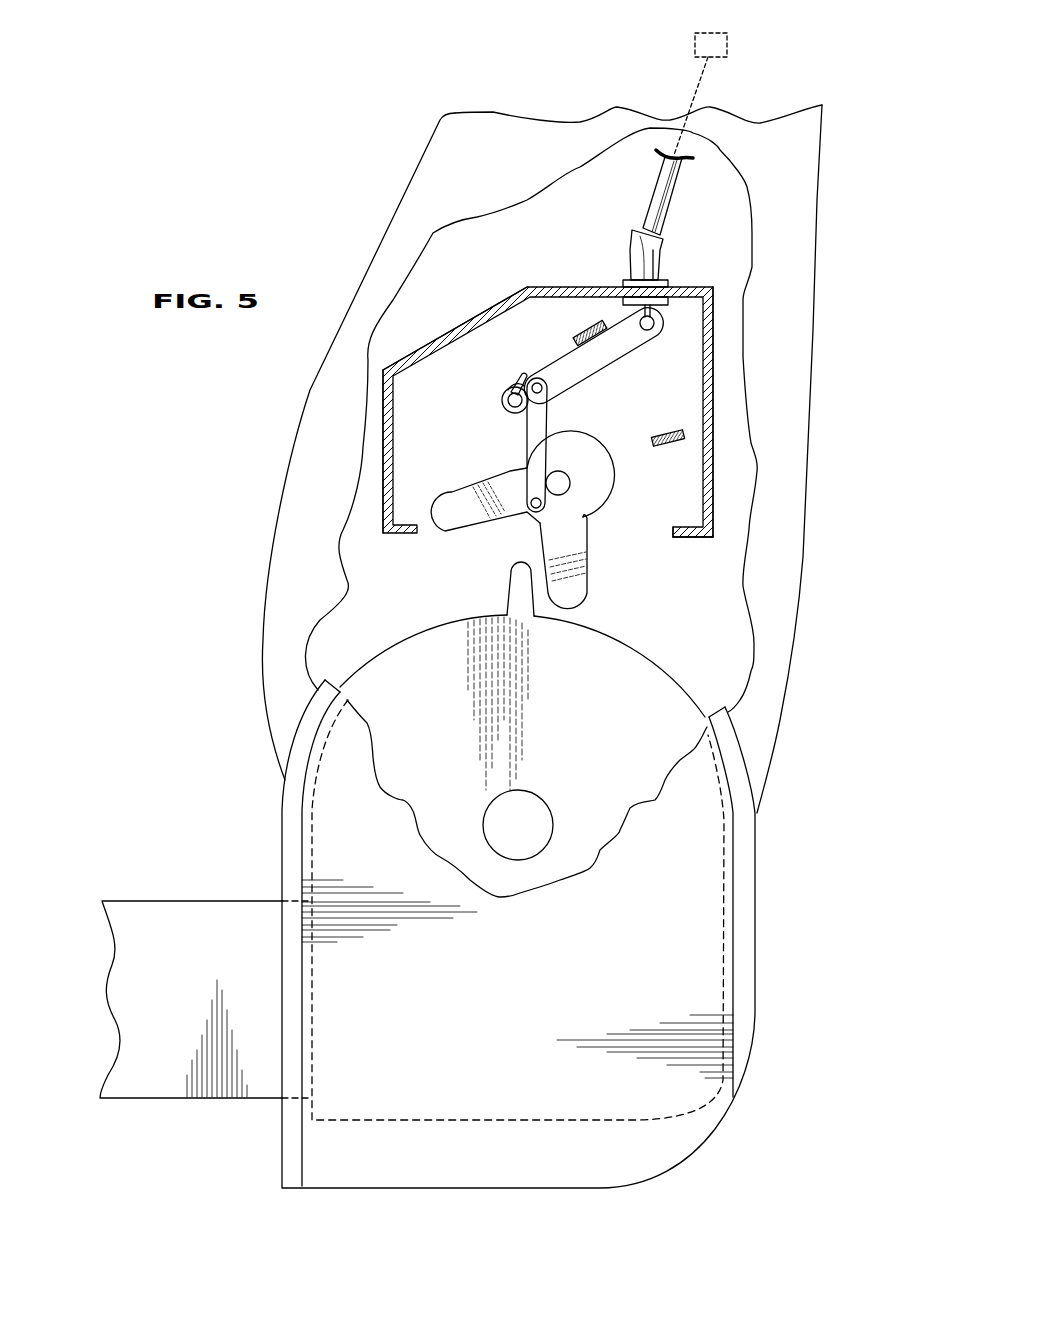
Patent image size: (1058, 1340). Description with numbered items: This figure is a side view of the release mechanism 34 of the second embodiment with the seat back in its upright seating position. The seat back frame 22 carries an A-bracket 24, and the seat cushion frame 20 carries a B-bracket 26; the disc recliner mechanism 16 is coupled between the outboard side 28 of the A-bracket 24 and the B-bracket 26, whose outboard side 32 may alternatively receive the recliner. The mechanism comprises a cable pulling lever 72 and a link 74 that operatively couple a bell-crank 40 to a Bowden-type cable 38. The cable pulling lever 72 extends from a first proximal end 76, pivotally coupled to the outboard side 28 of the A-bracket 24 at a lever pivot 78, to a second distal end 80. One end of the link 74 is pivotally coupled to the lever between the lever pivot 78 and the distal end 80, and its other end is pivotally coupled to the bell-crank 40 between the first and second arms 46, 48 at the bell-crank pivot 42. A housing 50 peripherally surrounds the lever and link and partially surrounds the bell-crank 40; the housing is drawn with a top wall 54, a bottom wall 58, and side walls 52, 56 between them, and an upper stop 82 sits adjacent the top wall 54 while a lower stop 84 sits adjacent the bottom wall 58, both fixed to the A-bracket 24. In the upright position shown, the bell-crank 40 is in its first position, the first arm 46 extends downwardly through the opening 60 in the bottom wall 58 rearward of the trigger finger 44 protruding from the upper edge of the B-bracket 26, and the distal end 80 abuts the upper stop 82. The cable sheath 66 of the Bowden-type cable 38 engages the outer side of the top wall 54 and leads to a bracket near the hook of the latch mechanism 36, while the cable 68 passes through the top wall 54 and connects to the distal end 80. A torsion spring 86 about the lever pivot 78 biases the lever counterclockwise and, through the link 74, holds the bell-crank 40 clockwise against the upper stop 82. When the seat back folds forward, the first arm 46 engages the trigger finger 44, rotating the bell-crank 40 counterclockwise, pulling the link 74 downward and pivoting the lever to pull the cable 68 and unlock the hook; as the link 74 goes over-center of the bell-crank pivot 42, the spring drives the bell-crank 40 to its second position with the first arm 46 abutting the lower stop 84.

The disc recliner mechanism 16 is at (526, 824).
The seat cushion frame 20 is at (138, 906).
The seat back frame 22 is at (500, 126).
The A-bracket 24 is at (812, 170).
The B-bracket 26 is at (660, 678).
The outboard side 28 is at (465, 175).
The outboard side 32 is at (415, 752).
The release mechanism 34 is at (375, 200).
The latch mechanism 36 is at (695, 44).
The Bowden-type cable 38 is at (650, 222).
The bell-crank 40 is at (568, 452).
The bell-crank pivot 42 is at (574, 488).
The trigger finger 44 is at (514, 592).
The first arm 46 is at (580, 580).
The second arm 48 is at (447, 522).
The housing 50 is at (716, 289).
The left housing wall 52 is at (393, 400).
The top wall 54 is at (536, 290).
The right housing wall 56 is at (709, 398).
The bottom wall 58 is at (690, 539).
The opening 60 is at (683, 538).
The cable sheath 66 is at (671, 174).
The cable 68 is at (653, 313).
The cable pulling lever 72 is at (560, 366).
The link 74 is at (528, 428).
The first proximal end 76 is at (501, 400).
The lever pivot 78 is at (511, 392).
The second distal end 80 is at (656, 335).
The upper stop 82 is at (580, 324).
The lower stop 84 is at (672, 447).
The torsion spring 86 is at (517, 384).